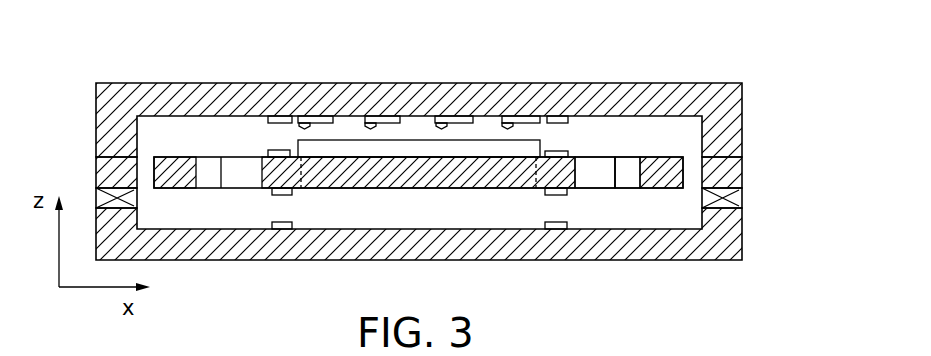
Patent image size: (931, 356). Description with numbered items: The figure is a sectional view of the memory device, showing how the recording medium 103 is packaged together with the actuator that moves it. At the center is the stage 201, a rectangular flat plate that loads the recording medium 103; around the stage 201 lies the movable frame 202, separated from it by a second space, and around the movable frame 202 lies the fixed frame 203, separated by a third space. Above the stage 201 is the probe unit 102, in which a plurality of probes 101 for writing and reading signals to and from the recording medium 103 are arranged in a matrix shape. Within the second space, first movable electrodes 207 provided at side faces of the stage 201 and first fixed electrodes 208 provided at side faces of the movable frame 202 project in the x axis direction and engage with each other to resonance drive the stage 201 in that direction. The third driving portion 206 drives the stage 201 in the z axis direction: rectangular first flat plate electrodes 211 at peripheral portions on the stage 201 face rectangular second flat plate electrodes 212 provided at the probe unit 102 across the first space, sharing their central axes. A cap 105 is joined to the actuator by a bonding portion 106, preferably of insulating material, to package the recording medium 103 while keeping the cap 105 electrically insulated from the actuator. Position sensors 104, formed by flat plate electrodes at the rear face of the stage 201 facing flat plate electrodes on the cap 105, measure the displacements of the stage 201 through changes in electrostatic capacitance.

The probe 101 is at (510, 117).
The probe unit 102 is at (730, 118).
The recording medium 103 is at (430, 150).
The position sensors 104 is at (560, 195).
The cap 105 is at (730, 240).
The bonding portion 106 is at (730, 200).
The stage 201 is at (351, 166).
The movable frame 202 is at (167, 172).
The fixed frame 203 is at (106, 172).
The third driving portion 206 is at (251, 78).
The first movable electrodes 207 is at (603, 170).
The first fixed electrodes 208 is at (633, 168).
The first flat plate electrodes 211 is at (278, 151).
The second flat plate electrodes 212 is at (283, 117).